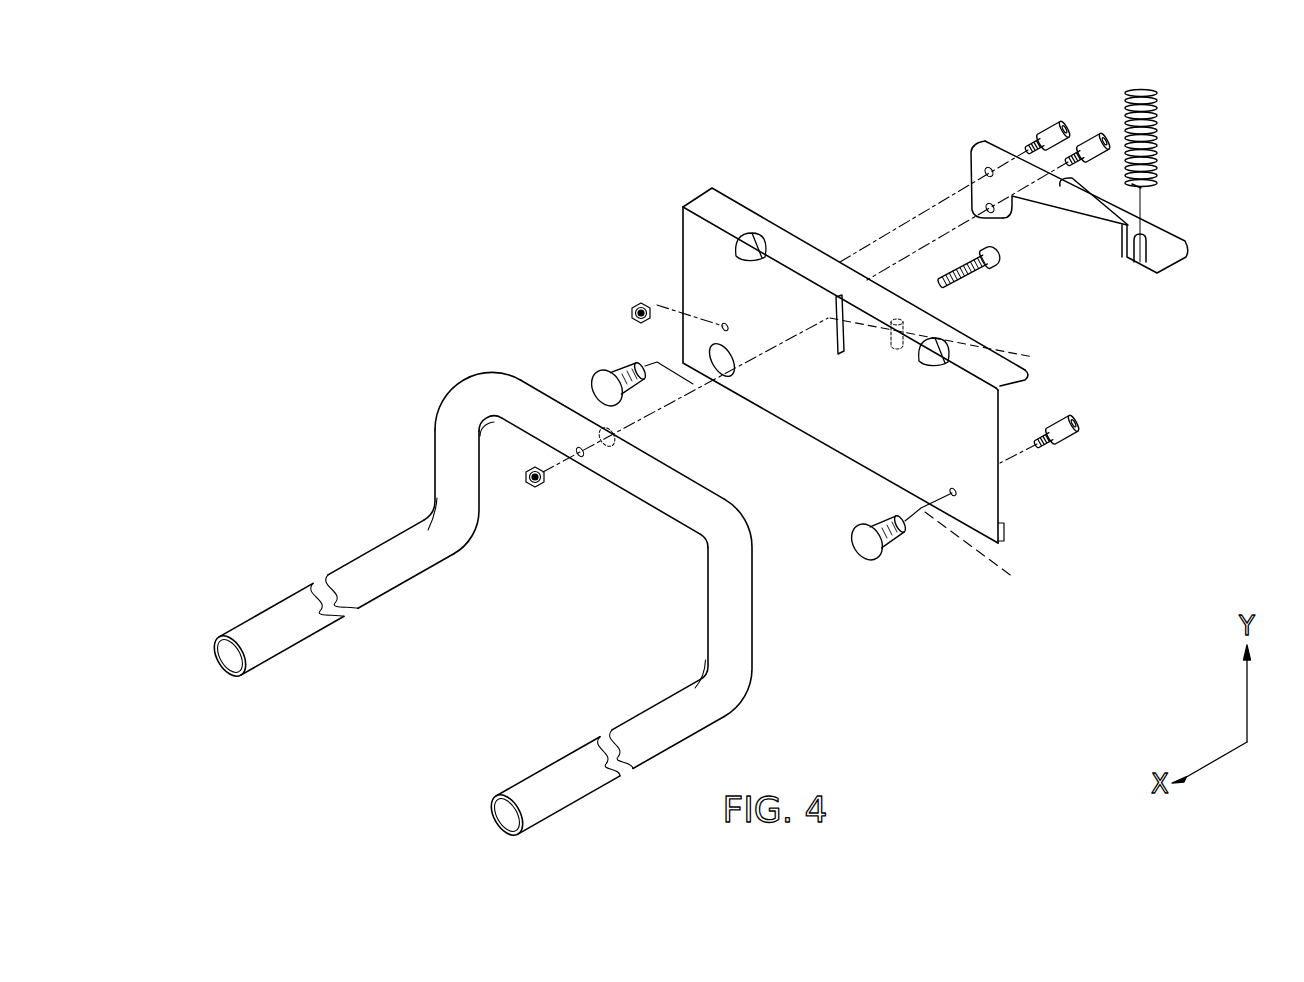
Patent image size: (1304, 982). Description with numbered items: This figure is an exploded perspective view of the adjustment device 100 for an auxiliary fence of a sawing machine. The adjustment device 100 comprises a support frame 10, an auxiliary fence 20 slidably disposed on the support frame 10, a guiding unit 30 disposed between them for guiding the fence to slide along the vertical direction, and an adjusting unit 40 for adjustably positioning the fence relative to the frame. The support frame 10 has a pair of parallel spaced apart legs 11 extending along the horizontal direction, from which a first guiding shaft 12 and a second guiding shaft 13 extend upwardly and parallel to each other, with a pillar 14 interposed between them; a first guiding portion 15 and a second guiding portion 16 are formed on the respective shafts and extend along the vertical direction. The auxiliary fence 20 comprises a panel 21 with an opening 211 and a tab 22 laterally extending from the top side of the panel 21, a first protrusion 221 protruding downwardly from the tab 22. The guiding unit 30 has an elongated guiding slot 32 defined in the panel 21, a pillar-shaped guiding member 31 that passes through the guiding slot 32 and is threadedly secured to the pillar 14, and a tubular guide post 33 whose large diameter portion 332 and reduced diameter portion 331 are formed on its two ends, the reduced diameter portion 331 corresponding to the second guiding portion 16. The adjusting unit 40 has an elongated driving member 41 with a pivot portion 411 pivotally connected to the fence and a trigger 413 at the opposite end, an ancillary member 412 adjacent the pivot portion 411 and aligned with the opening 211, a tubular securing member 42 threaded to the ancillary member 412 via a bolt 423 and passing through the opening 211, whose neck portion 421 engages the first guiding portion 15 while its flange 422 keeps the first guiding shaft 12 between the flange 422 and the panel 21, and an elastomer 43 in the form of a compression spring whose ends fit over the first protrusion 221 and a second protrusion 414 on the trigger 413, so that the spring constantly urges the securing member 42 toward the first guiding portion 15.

The adjustment device 100 is at (738, 168).
The support frame 10 is at (520, 594).
The legs 11 is at (297, 624).
The first guiding shaft 12 is at (450, 428).
The second guiding shaft 13 is at (737, 618).
The pillar 14 is at (633, 480).
The first guiding portion 15 is at (468, 475).
The second guiding portion 16 is at (708, 605).
The auxiliary fence 20 is at (897, 374).
The panel 21 is at (990, 475).
The tab 22 is at (1028, 386).
The opening 211 is at (722, 376).
The first protrusion 221 is at (955, 343).
The guiding unit 30 is at (1010, 289).
The guiding member 31 is at (983, 268).
The guiding slot 32 is at (843, 353).
The guide post 33 is at (908, 578).
The reduced diameter portion 331 is at (903, 540).
The large diameter portion 332 is at (875, 557).
The adjusting unit 40 is at (1057, 272).
The driving member 41 is at (1190, 260).
The pivot portion 411 is at (975, 176).
The ancillary member 412 is at (978, 205).
The trigger 413 is at (1170, 268).
The second protrusion 414 is at (1138, 265).
The securing member 42 is at (559, 332).
The neck portion 421 is at (645, 365).
The flange 422 is at (592, 385).
The bolt 423 is at (1078, 148).
The elastomer 43 is at (1155, 133).